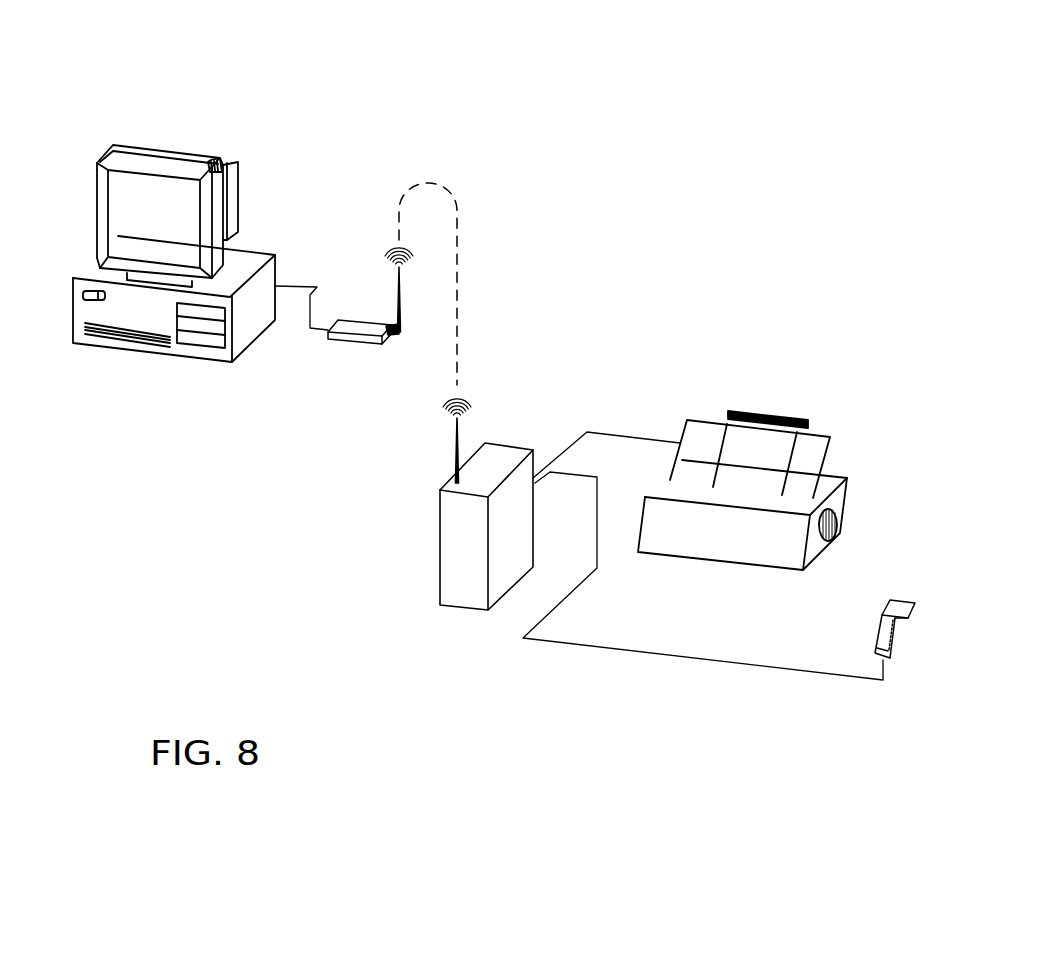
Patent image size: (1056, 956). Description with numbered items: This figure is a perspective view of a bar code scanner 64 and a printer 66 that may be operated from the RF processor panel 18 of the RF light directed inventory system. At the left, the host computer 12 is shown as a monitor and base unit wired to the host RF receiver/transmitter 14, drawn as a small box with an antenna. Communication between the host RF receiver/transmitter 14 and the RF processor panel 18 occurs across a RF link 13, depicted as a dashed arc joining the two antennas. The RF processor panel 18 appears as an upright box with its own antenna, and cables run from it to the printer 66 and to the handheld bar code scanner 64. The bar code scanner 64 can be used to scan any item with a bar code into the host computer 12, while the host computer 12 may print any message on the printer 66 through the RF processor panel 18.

The host computer 12 is at (207, 225).
The RF link 13 is at (458, 238).
The host RF receiver/transmitter 14 is at (368, 320).
The RF processor panel 18 is at (440, 570).
The bar code scanner 64 is at (900, 598).
The printer 66 is at (848, 498).